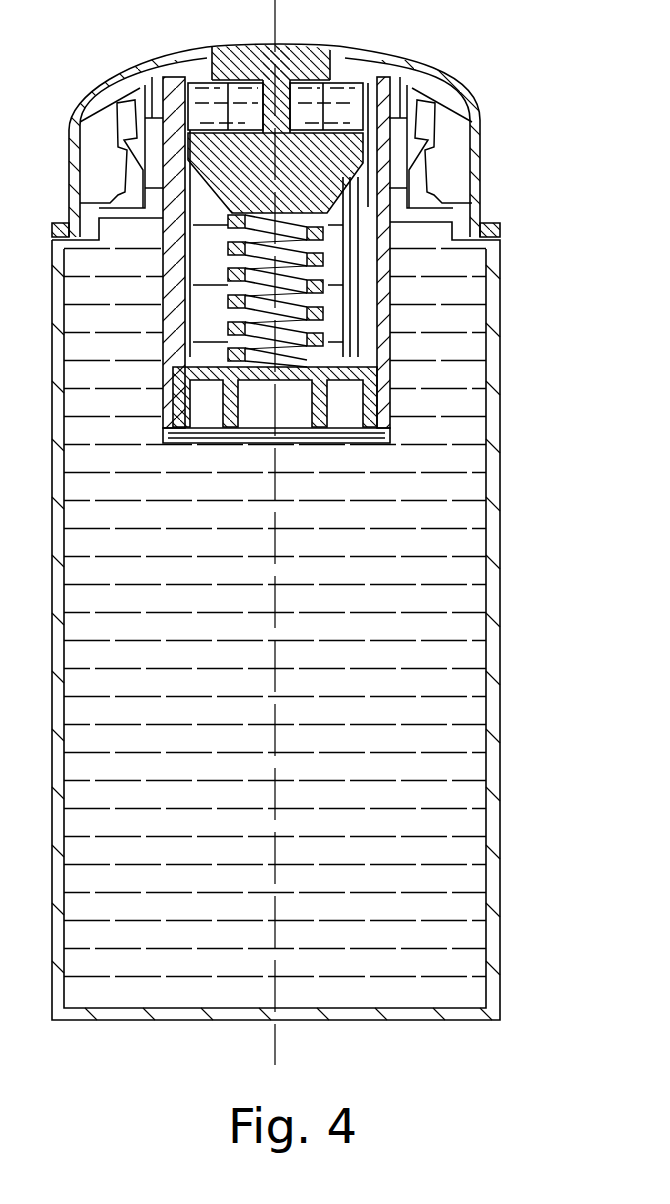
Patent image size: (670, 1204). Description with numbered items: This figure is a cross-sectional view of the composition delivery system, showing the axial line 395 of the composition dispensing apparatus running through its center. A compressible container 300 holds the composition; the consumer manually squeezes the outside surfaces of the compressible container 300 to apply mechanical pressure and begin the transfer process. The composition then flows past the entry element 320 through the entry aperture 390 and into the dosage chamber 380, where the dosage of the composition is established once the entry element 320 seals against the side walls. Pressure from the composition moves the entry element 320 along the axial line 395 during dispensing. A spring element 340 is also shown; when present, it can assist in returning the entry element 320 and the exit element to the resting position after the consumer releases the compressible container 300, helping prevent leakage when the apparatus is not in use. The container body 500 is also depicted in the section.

The compressible container 300 is at (460, 668).
The entry element 320 is at (365, 148).
The spring element 340 is at (323, 287).
The dosage chamber 380 is at (240, 108).
The entry aperture 390 is at (368, 162).
The axial line 395 is at (277, 567).
The container body 500 is at (380, 835).